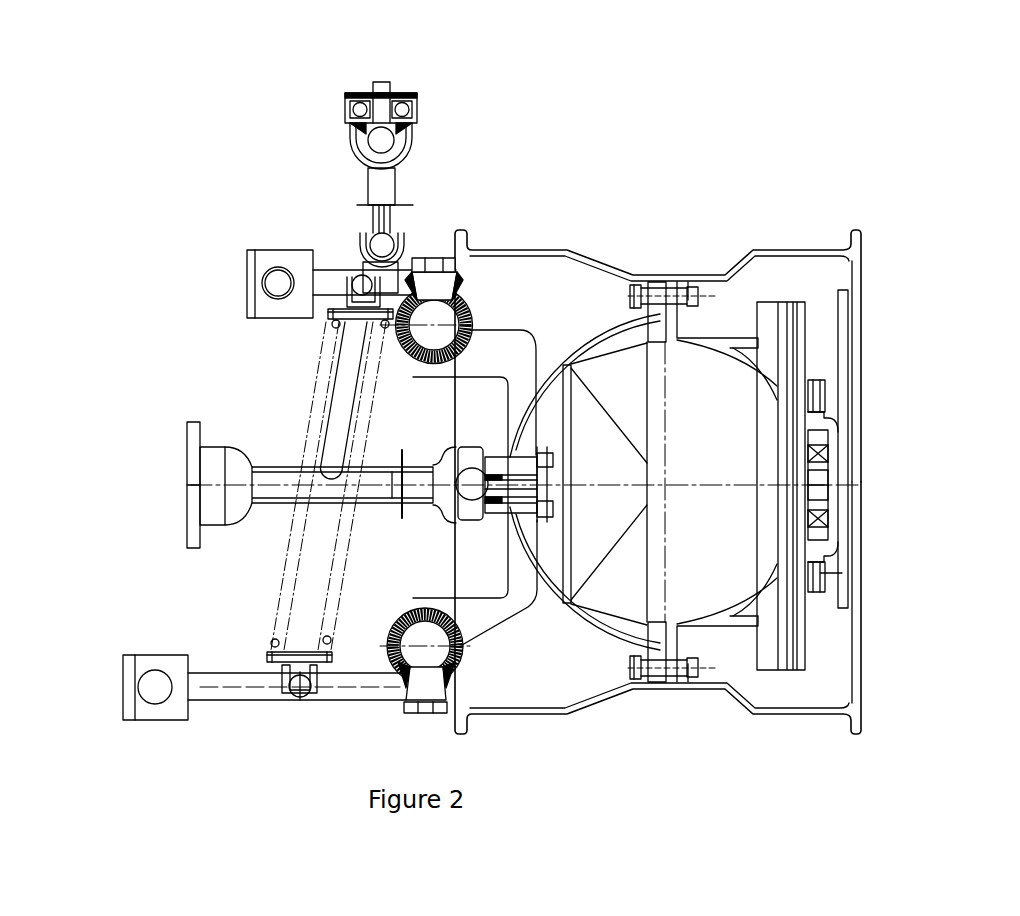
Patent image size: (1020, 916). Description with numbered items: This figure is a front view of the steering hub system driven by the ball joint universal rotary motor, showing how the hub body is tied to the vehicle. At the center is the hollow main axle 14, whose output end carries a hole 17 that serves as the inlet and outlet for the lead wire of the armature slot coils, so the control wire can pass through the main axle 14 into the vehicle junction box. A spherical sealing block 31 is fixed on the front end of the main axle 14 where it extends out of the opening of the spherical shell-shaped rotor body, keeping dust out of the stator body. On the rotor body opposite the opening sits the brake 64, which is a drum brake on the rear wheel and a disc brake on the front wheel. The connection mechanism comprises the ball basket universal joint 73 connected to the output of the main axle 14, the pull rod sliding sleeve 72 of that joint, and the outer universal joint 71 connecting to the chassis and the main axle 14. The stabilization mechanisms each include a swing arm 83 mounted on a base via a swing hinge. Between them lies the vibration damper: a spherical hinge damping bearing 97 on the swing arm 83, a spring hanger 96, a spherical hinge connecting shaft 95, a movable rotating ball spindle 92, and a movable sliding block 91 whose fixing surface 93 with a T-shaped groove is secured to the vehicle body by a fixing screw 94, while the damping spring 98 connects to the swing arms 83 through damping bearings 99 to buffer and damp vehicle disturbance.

The main axle 14 is at (542, 450).
The hole 17 is at (498, 445).
The sealing block 31 is at (546, 396).
The drum brake 64 is at (795, 322).
The outer universal joint connecting to a chassis 71 is at (212, 476).
The pull rod sliding sleeve of ball basket universal joint 72 is at (277, 468).
The ball basket universal joint 73 is at (447, 463).
The swing arm 83 is at (308, 280).
The sliding block 91 is at (345, 100).
The rotating ball spindle 92 is at (350, 110).
The fixing surface 93 is at (357, 92).
The fixing screw 94 is at (388, 85).
The spherical hinge connecting shaft 95 is at (370, 148).
The spring hanger 96 is at (370, 213).
The spherical hinge damping bearing 97 is at (358, 242).
The spring 98 is at (337, 330).
The damping bearing 99 is at (282, 668).